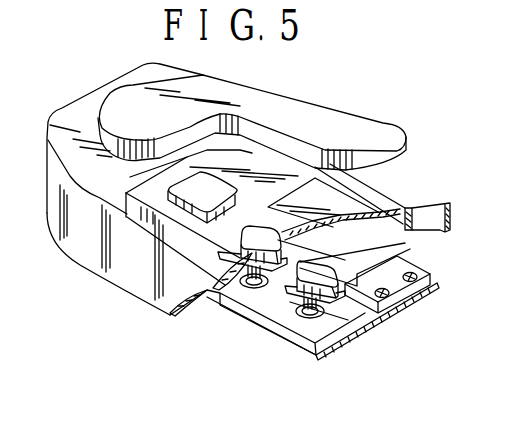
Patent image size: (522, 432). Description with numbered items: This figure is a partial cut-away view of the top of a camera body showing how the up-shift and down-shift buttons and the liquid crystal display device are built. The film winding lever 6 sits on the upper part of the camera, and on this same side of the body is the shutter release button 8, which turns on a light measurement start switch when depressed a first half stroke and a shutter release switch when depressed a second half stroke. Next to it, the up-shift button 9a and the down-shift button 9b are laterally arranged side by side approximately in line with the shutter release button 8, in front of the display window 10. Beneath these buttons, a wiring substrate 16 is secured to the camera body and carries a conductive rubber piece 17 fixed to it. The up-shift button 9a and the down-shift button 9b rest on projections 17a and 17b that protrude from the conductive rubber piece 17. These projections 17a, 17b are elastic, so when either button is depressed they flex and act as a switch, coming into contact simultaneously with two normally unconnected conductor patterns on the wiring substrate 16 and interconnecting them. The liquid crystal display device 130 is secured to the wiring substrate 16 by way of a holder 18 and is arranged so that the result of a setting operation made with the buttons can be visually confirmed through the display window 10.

The film winding lever 6 is at (348, 120).
The shutter release button 8 is at (176, 189).
The up-shift button 9a is at (253, 225).
The down-shift button 9b is at (320, 265).
The display window 10 is at (317, 190).
The liquid crystal display device 130 is at (420, 212).
The wiring substrate 16 is at (362, 326).
The conductive rubber piece 17 is at (280, 338).
The projection 17a is at (243, 287).
The projection 17b is at (310, 318).
The holder 18 is at (430, 288).